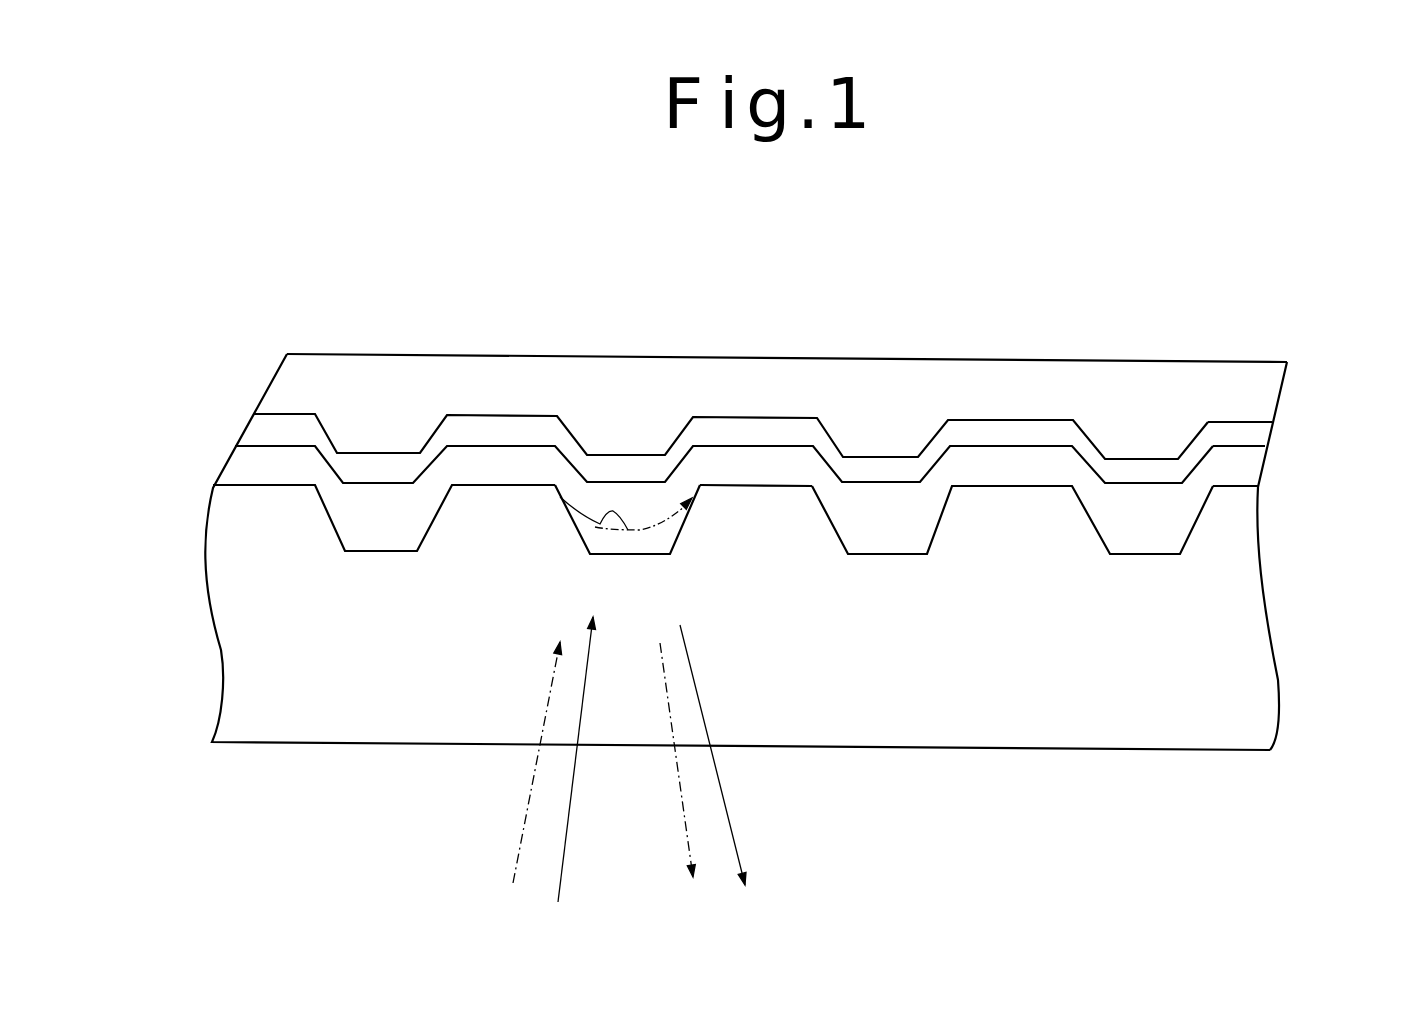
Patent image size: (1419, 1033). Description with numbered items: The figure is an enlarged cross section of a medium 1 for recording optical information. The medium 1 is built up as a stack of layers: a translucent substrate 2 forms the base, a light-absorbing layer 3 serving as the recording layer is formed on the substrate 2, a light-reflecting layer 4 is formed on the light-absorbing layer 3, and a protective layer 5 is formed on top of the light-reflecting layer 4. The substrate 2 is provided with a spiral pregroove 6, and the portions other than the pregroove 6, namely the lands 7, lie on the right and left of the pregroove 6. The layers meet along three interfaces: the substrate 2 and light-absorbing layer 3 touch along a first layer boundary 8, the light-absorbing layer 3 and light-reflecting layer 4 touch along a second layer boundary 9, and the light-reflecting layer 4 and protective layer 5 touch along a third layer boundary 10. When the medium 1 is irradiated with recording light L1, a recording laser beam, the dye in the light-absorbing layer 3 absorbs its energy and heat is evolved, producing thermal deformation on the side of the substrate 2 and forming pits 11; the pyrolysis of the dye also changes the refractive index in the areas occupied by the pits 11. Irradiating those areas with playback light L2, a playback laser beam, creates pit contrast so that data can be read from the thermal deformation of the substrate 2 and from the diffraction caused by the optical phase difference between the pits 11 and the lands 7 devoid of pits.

The medium for recording optical information 1 is at (952, 323).
The translucent substrate 2 is at (252, 643).
The light-absorbing layer 3 is at (243, 466).
The light-reflecting layer 4 is at (265, 432).
The protective layer 5 is at (307, 382).
The pregroove 6 is at (632, 551).
The lands 7 is at (770, 484).
The first layer boundary 8 is at (1263, 486).
The second layer boundary 9 is at (1272, 448).
The third layer boundary 10 is at (1277, 423).
The pits 11 is at (595, 527).
The recording light L1 is at (565, 843).
The playback light L2 is at (528, 793).